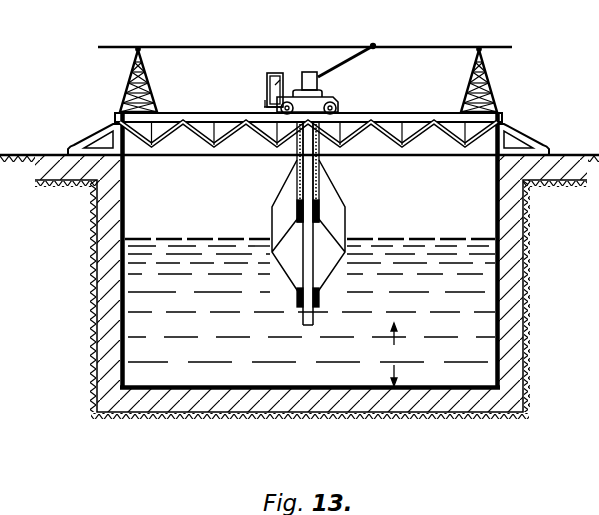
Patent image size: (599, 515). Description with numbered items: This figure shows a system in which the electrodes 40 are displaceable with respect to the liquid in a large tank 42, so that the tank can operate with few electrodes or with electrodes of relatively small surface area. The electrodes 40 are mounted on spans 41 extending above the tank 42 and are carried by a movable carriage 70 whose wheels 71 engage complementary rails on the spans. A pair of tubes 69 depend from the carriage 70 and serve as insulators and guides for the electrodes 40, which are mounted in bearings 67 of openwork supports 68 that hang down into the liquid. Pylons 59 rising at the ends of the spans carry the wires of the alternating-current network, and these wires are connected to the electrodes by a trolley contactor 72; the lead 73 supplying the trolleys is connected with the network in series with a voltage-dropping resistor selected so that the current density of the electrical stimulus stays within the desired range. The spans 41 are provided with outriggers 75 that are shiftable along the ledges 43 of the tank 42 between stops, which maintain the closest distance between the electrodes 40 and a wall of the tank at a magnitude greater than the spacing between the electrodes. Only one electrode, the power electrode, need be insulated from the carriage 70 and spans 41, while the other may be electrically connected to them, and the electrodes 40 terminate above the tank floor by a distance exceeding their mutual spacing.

The electrodes 40 is at (307, 325).
The spans 41 is at (210, 117).
The tank 42 is at (510, 332).
The ledges 43 is at (55, 153).
The pylons 59 is at (145, 71).
The bearings 67 is at (297, 207).
The openwork supports 68 is at (333, 202).
The tubes 69 is at (294, 158).
The carriage 70 is at (268, 80).
The wheels 71 is at (343, 102).
The trolley contactor 72 is at (333, 66).
The lead 73 is at (197, 46).
The outriggers 75 is at (96, 126).